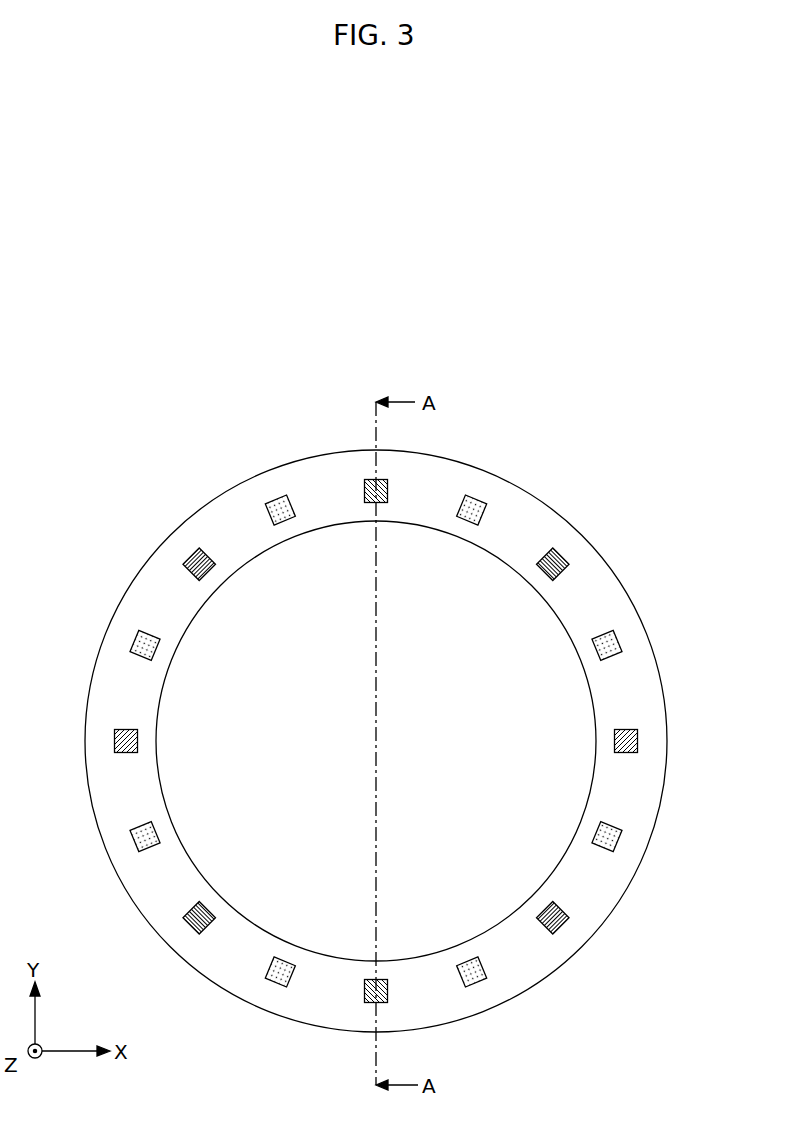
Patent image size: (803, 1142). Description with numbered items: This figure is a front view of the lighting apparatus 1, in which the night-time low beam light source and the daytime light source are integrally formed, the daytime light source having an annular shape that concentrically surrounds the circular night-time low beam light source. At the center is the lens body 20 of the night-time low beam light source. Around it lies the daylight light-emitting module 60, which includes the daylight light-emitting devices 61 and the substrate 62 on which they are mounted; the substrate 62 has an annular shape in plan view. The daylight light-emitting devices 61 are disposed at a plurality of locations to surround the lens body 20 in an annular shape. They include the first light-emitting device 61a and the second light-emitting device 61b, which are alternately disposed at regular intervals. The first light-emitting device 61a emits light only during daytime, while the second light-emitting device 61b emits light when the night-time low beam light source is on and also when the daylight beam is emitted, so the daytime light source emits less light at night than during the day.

The lighting apparatus 1 is at (635, 447).
The lens body 20 is at (227, 797).
The daylight light-emitting module 60 is at (697, 555).
The daylight light-emitting device 61 is at (621, 641).
The first light-emitting device 61a is at (477, 980).
The second light-emitting device 61b is at (561, 924).
The substrate 62 is at (615, 593).